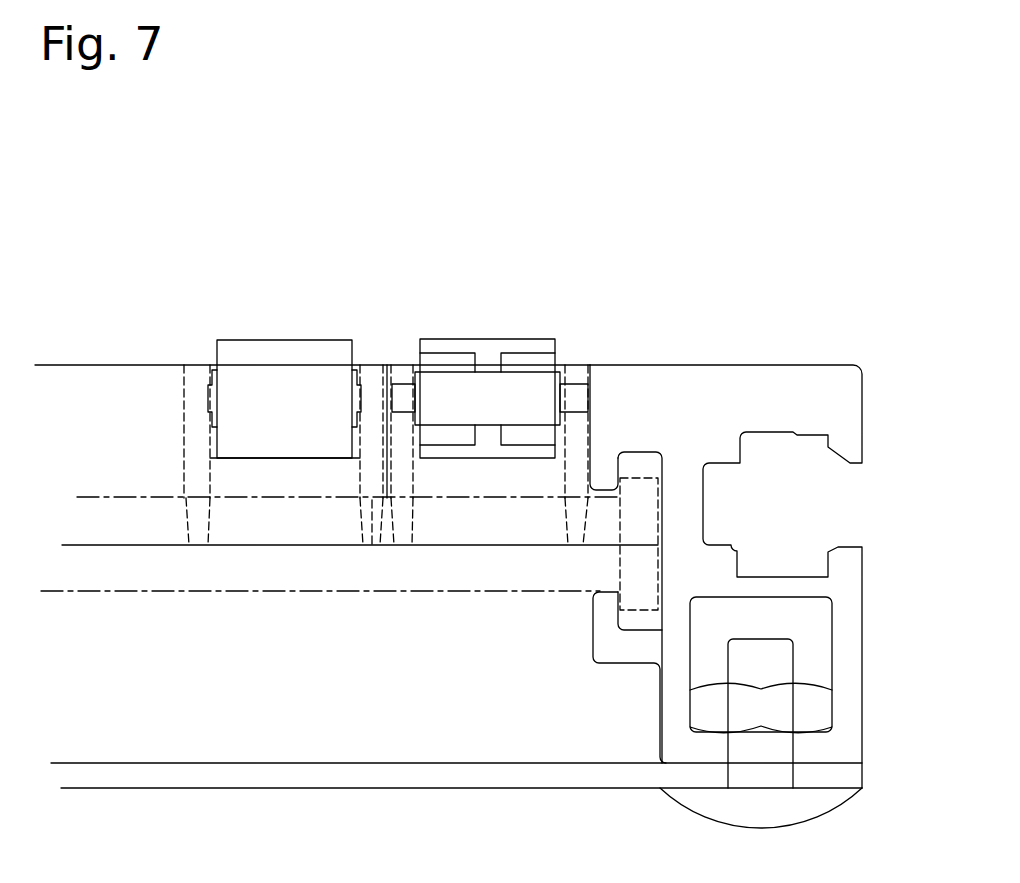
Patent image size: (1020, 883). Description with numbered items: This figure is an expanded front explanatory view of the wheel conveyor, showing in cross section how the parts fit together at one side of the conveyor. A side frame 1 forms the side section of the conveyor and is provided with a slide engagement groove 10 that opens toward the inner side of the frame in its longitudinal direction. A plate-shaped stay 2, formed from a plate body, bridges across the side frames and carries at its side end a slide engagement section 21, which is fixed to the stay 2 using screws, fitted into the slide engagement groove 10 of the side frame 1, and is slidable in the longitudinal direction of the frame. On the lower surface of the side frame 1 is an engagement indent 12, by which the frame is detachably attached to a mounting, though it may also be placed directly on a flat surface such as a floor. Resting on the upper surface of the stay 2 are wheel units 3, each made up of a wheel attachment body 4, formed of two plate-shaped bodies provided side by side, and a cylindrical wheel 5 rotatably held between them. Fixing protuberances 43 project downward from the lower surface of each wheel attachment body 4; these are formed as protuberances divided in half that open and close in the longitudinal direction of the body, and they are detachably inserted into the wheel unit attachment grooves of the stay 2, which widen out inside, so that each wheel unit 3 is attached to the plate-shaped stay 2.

The side frame 1 is at (802, 382).
The plate-shaped stay 2 is at (230, 577).
The wheel unit 3 is at (377, 331).
The wheel attachment body 4 is at (288, 228).
The wheel 5 is at (300, 350).
The slide engagement groove 10 is at (641, 465).
The engagement indent 12 is at (822, 663).
The slide engagement section 21 is at (620, 565).
The fixing protuberance 43 is at (202, 543).